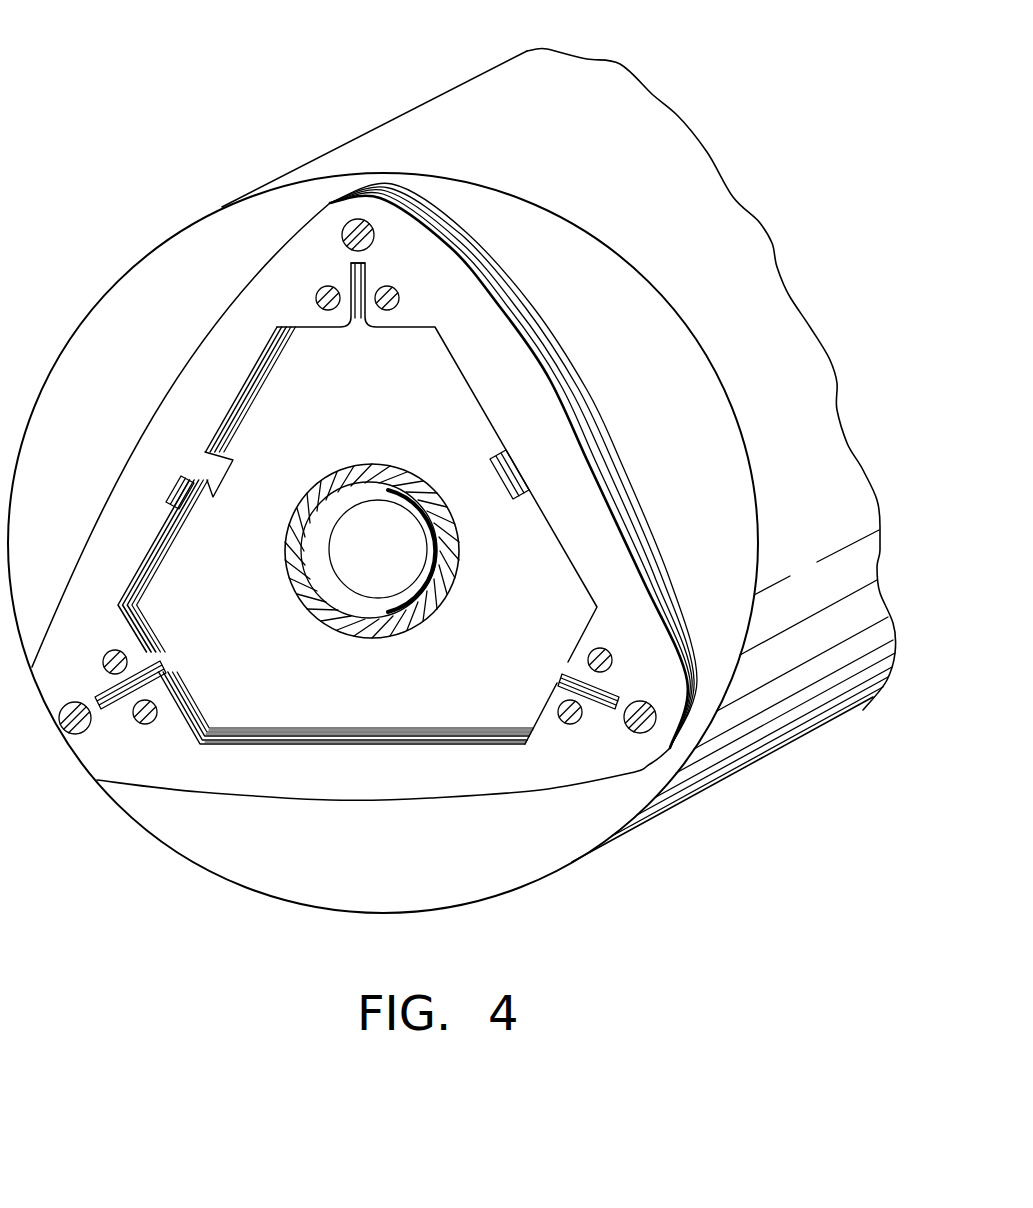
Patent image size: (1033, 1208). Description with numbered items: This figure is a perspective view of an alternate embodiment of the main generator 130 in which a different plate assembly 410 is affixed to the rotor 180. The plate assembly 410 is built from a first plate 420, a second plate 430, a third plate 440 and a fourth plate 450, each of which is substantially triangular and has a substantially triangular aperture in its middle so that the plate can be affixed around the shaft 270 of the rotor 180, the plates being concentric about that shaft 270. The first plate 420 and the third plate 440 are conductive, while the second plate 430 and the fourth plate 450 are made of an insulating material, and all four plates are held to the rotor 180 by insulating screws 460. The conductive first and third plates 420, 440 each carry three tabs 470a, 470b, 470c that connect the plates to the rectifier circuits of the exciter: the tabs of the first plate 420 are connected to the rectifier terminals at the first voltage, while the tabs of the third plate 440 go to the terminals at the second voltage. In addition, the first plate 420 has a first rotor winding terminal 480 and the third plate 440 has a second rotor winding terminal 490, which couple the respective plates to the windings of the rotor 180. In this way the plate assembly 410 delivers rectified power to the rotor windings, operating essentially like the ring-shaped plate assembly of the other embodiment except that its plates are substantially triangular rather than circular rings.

The main generator 130 is at (423, 100).
The rotor 180 is at (163, 242).
The shaft 270 is at (290, 563).
The plate assembly 410 is at (194, 341).
The first plate 420 is at (288, 778).
The second plate 430 is at (254, 735).
The third plate 440 is at (340, 740).
The fourth plate 450 is at (430, 737).
The insulating screws 460 is at (344, 236).
The tab 470a is at (142, 656).
The tab 470b is at (573, 652).
The tab 470c is at (396, 312).
The first rotor winding terminal 480 is at (197, 490).
The second rotor winding terminal 490 is at (490, 467).